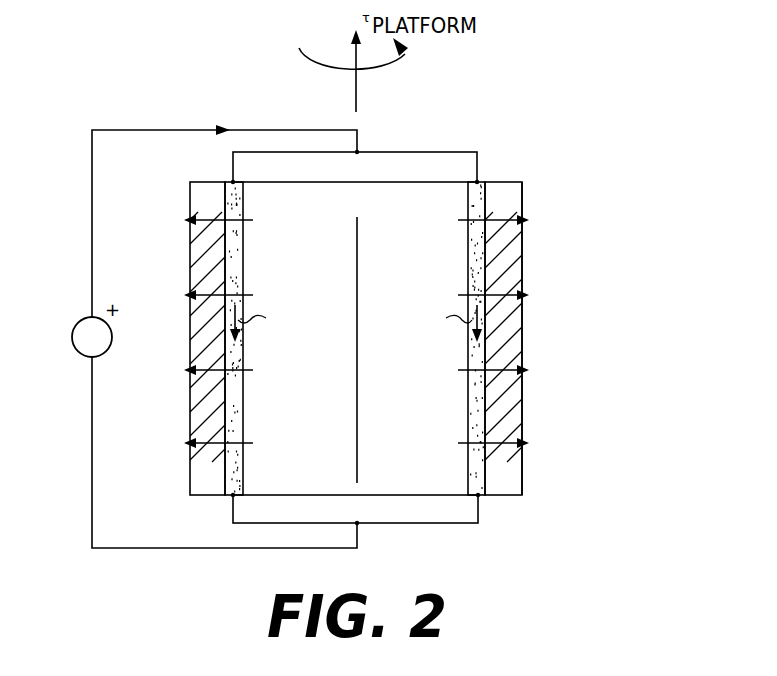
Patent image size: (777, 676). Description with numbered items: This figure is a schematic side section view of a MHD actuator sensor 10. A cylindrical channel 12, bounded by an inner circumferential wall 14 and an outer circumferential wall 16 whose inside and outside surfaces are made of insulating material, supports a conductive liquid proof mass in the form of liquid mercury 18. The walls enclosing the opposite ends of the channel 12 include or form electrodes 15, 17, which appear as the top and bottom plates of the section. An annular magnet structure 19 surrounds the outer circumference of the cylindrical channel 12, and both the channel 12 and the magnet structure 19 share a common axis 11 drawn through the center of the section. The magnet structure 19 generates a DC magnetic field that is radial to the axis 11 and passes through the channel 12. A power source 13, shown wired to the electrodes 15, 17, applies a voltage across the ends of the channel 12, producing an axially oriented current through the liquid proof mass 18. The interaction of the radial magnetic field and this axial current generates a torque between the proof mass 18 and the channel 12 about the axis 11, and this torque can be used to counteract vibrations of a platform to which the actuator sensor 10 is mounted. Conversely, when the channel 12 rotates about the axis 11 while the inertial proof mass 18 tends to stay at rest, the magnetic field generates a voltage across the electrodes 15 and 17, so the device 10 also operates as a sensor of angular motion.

The MHD actuator sensor 10 is at (592, 120).
The common axis 11 is at (358, 244).
The cylindrical channel 12 is at (243, 257).
The power source 13 is at (74, 344).
The inner circumferential wall 14 is at (242, 425).
The electrode 15 is at (233, 182).
The outer circumferential wall 16 is at (500, 415).
The electrode 17 is at (233, 495).
The liquid mercury 18 is at (475, 277).
The annular magnet structure 19 is at (522, 403).